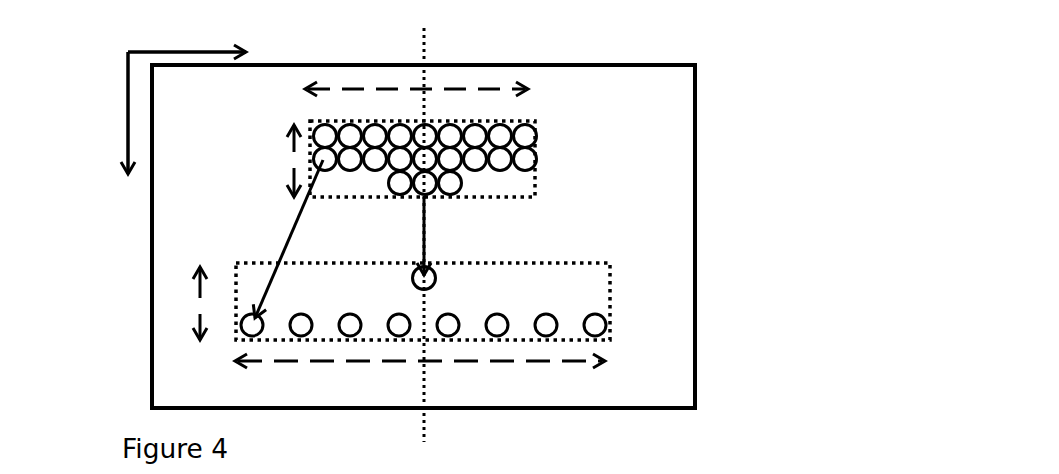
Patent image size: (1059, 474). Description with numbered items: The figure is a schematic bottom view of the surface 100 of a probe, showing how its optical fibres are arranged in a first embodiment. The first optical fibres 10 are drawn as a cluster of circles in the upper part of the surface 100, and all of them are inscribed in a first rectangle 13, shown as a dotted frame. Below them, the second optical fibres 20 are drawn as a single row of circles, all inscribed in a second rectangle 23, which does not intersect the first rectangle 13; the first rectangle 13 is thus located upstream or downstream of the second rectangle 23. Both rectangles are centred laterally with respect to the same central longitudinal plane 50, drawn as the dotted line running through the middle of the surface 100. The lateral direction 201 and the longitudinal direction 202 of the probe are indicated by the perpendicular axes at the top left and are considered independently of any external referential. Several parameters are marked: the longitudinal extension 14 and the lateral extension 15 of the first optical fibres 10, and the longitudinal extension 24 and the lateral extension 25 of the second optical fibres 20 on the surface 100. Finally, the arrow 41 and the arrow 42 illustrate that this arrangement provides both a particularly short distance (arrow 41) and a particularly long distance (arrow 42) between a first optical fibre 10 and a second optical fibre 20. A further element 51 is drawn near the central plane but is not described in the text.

The surface 100 is at (127, 243).
The lateral direction 201 is at (178, 50).
The longitudinal direction 202 is at (127, 120).
The central longitudinal plane 50 is at (425, 52).
The first optical fibre 10 is at (518, 137).
The first rectangle 13 is at (535, 157).
The longitudinal extension 14 is at (290, 148).
The lateral extension 15 is at (342, 88).
The second rectangle 23 is at (612, 301).
The second optical fibre 20 is at (600, 324).
The longitudinal extension 24 is at (202, 287).
The lateral extension 25 is at (340, 373).
The arrow 41 is at (423, 242).
The arrow 42 is at (292, 232).
The ball at receiving position on central axis 51 is at (448, 265).